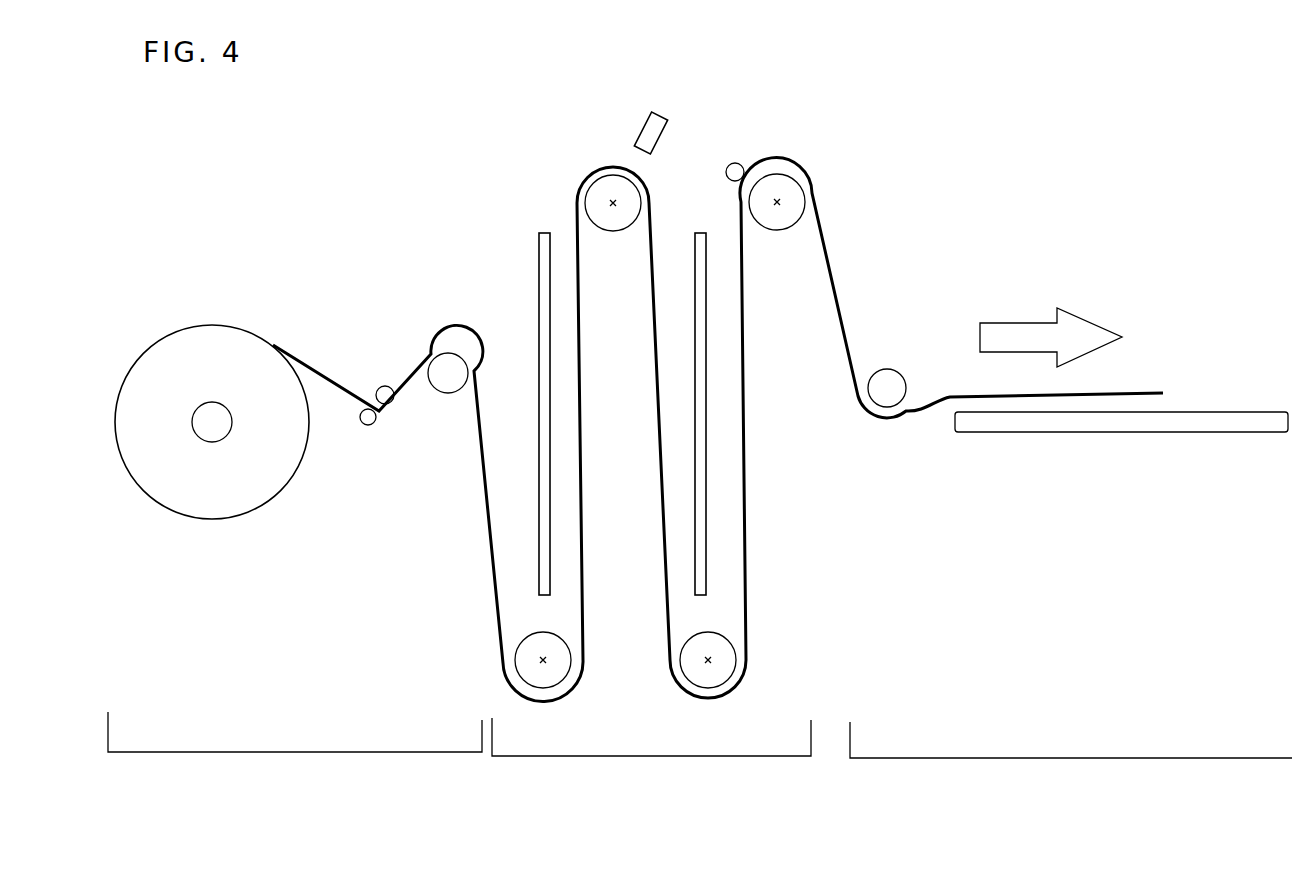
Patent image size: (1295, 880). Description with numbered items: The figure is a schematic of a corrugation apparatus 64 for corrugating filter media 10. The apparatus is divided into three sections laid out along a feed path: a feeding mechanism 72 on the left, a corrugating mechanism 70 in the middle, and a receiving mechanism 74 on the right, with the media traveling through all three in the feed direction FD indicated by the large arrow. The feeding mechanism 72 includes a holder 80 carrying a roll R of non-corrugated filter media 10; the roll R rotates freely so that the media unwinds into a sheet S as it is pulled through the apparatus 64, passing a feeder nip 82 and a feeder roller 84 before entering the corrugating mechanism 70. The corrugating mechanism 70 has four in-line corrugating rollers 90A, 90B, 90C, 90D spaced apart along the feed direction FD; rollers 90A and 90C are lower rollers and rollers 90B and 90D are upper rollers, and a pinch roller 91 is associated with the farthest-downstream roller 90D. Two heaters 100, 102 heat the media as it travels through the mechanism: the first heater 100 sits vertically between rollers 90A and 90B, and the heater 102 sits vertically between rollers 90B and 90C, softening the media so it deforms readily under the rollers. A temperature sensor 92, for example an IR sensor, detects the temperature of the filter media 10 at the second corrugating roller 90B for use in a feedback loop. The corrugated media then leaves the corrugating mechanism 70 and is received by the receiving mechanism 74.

The roll R is at (212, 325).
The sheet S is at (333, 377).
The holder 80 is at (212, 432).
The feeder nip 82 is at (382, 427).
The feeder roller 84 is at (443, 387).
The filter media 10 is at (492, 508).
The first heater 100 is at (538, 277).
The heater 102 is at (693, 263).
The corrugating roller 90A is at (538, 638).
The corrugating roller 90B is at (613, 227).
The corrugating roller 90C is at (702, 640).
The corrugating roller 90D is at (777, 225).
The pinch roller 91 is at (735, 163).
The temperature sensor 92 is at (637, 127).
The feed direction FD is at (1012, 318).
The corrugation apparatus 64 is at (960, 159).
The feeding mechanism 72 is at (263, 752).
The corrugating mechanism 70 is at (633, 757).
The receiving mechanism 74 is at (1057, 757).